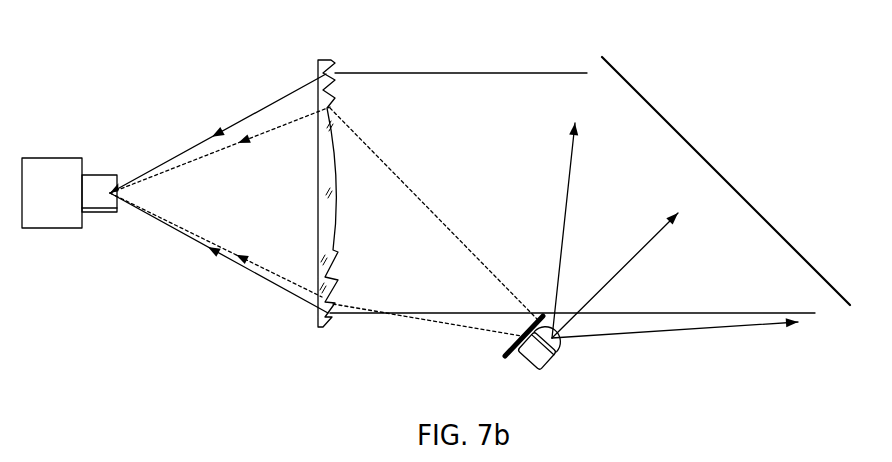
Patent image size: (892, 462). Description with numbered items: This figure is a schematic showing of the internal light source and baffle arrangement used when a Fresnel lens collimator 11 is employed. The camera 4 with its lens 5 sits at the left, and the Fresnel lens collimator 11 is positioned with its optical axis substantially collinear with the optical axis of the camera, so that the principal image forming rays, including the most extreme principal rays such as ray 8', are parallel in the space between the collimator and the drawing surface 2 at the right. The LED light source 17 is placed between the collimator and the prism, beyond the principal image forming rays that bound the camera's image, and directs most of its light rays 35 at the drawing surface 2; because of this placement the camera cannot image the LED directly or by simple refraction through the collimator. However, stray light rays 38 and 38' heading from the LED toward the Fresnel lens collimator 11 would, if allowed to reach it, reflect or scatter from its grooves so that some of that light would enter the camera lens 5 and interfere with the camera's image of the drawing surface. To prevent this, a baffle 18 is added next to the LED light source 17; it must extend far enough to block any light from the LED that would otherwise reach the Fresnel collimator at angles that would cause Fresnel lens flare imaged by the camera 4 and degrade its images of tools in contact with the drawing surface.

The flat surface 2 is at (747, 200).
The camera 4 is at (40, 219).
The lens 5 is at (96, 182).
The extreme principal ray 8' is at (572, 297).
The Fresnel lens collimator 11 is at (320, 60).
The LED light source 17 is at (562, 345).
The baffle 18 is at (507, 345).
The light rays 35 is at (567, 208).
The light ray 38 is at (434, 214).
The light ray 38' is at (427, 327).